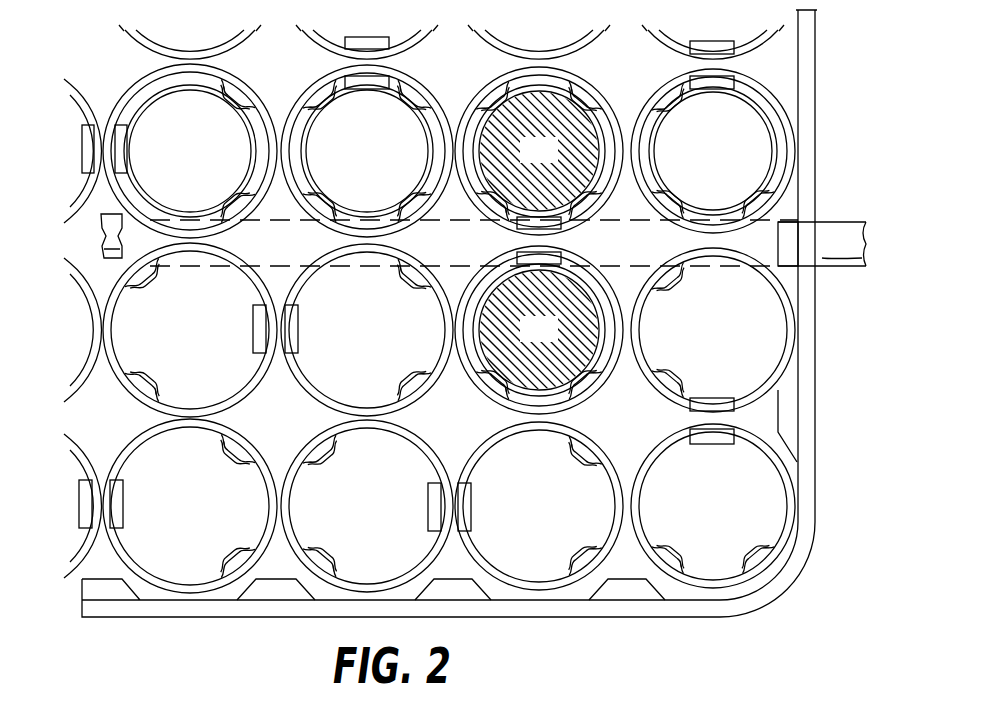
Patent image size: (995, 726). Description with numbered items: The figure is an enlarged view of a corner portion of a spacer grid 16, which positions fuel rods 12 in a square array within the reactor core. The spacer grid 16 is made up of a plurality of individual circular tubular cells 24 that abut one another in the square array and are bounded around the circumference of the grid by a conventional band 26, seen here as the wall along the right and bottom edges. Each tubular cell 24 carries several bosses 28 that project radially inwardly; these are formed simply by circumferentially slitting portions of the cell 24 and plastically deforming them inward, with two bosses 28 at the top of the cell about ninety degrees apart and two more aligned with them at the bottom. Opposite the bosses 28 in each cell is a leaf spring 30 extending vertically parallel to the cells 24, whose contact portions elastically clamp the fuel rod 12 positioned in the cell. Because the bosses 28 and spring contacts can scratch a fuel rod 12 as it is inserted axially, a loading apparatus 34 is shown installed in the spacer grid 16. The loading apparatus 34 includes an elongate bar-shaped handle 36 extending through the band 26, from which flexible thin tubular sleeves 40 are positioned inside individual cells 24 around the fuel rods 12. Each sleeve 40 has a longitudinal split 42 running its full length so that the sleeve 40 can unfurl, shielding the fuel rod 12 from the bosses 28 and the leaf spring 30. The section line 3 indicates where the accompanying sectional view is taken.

The section line 3- 3 is at (540, 104).
The fuel rod 12 is at (524, 163).
The spacer grid 16 is at (213, 619).
The tubular cell 24 is at (600, 92).
The band 26 is at (816, 29).
The boss 28 is at (475, 132).
The leaf spring 30 is at (93, 108).
The loading apparatus 34 is at (835, 272).
The handle 36 is at (867, 252).
The tubular sleeve 40 is at (598, 156).
The longitudinal split 42 is at (749, 210).